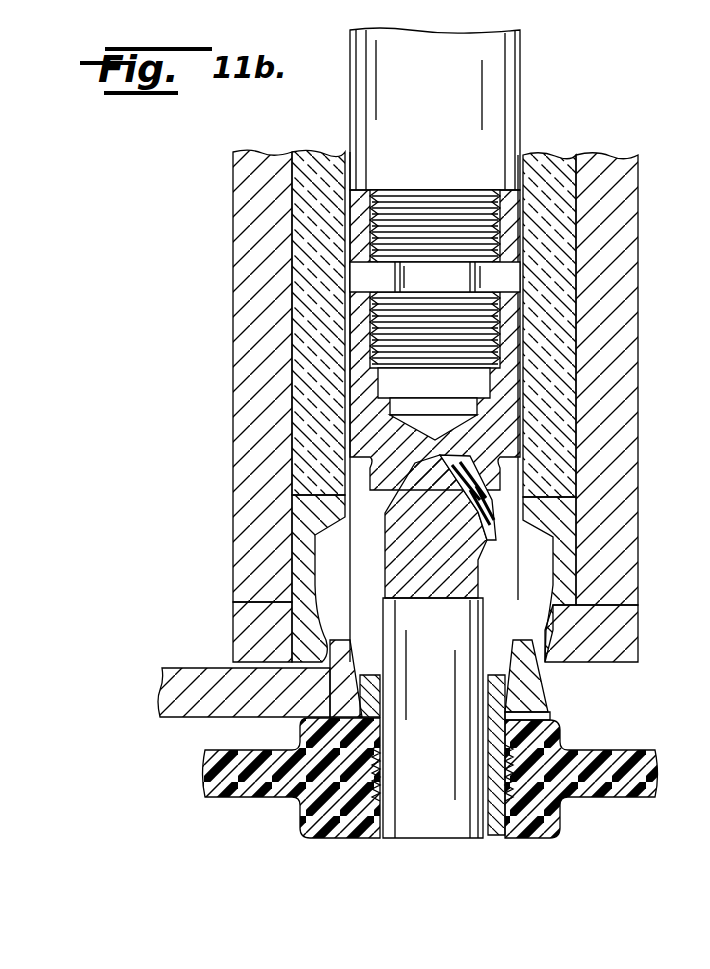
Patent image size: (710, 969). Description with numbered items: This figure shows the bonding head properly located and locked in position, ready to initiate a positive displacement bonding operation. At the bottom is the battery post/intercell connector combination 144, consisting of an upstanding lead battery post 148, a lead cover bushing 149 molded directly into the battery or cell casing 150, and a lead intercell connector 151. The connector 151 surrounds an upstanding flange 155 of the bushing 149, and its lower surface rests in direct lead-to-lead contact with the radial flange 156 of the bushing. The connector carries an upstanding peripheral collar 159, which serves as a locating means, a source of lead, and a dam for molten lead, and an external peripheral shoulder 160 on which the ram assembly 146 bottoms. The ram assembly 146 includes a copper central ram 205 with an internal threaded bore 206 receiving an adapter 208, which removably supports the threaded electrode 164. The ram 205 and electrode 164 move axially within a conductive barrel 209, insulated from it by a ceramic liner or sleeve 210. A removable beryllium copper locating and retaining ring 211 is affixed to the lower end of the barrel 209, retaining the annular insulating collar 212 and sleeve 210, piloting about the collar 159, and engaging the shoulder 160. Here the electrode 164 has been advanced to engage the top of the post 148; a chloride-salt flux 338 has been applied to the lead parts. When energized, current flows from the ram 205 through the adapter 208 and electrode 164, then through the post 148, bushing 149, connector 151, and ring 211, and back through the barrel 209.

The battery post/intercell connector combination 144 is at (292, 806).
The ram assembly 146 is at (214, 484).
The battery post 148 is at (470, 612).
The lead cover bushing 149 is at (490, 796).
The battery or cell casing 150 is at (612, 750).
The lead intercell connector 151 is at (212, 668).
The upstanding flange 155 is at (500, 702).
The horizontal or radial flange 156 is at (522, 720).
The upstanding peripheral collar 159 is at (342, 640).
The external peripheral shoulder 160 is at (546, 640).
The electrode 164 is at (372, 498).
The central ram 205 is at (520, 74).
The internal threaded bore 206 is at (440, 195).
The adapter 208 is at (348, 292).
The barrel 209 is at (624, 432).
The ceramic liner or sleeve 210 is at (572, 296).
The locating and retaining ring 211 is at (628, 640).
The annular insulating collar 212 is at (572, 552).
The flux 338 is at (484, 542).